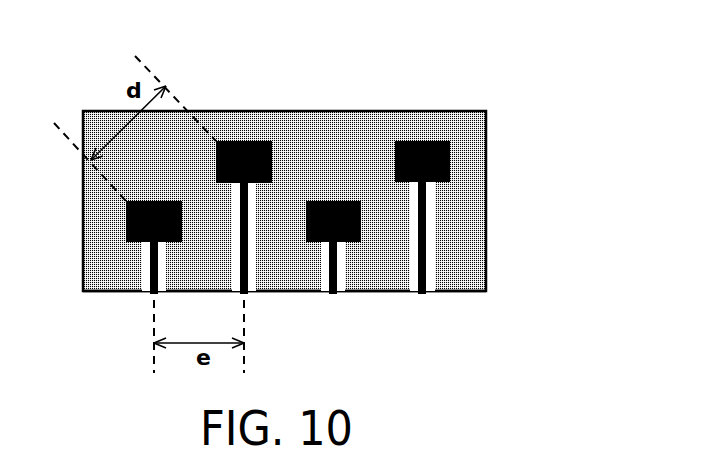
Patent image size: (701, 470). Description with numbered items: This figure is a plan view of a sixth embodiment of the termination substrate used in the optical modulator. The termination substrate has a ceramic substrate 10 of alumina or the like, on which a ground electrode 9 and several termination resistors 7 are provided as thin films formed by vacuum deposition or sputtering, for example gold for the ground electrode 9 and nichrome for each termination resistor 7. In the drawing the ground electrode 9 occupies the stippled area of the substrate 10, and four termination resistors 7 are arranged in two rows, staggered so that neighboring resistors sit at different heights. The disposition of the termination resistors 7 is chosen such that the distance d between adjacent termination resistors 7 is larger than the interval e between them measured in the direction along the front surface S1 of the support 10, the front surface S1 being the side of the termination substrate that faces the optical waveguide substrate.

The termination resistor 7 is at (317, 193).
The ground electrode 9 is at (445, 192).
The ceramic substrate 10 is at (388, 282).
The front surface S1 is at (275, 282).